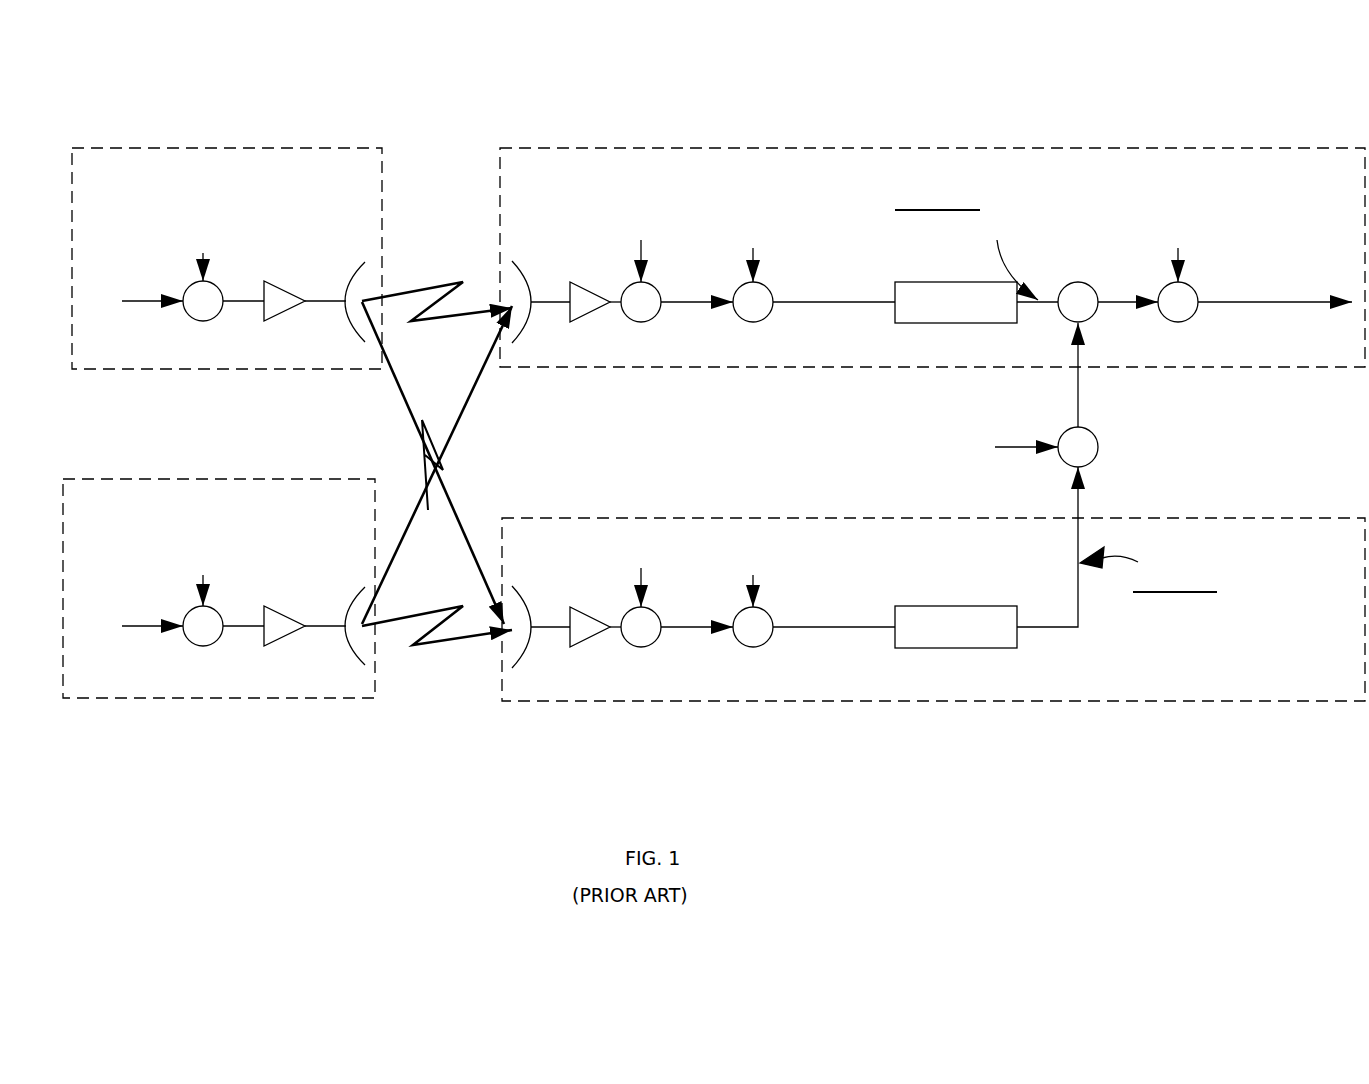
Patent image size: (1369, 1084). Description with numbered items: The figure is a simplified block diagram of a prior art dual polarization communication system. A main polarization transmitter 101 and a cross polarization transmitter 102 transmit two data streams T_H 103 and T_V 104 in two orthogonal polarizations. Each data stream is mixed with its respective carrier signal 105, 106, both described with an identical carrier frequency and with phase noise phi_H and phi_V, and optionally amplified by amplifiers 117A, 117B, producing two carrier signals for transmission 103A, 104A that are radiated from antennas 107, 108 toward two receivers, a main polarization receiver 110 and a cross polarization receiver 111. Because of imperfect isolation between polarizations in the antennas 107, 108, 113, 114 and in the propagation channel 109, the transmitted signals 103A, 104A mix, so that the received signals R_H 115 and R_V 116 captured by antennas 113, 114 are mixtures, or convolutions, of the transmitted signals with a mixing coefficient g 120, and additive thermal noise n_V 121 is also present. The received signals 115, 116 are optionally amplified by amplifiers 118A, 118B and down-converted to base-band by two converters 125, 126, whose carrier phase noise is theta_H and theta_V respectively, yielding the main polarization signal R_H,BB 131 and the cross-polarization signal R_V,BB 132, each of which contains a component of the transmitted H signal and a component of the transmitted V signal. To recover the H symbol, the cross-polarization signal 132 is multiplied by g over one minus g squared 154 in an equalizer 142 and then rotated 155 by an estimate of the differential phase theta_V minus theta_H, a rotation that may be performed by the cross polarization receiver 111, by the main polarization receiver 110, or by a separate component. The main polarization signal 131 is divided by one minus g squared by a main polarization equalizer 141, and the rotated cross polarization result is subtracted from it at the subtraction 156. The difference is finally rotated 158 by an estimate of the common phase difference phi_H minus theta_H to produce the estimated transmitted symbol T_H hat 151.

The main polarization transmitter 101 is at (120, 148).
The cross polarization transmitter 102 is at (118, 698).
The data stream T_H 103 is at (135, 316).
The data stream T_V 104 is at (131, 640).
The carrier signal 105 is at (228, 253).
The carrier signal 106 is at (212, 573).
The antenna 107 is at (352, 273).
The antenna 108 is at (352, 600).
The propagation channel 109 is at (467, 135).
The main polarization receiver 110 is at (722, 148).
The cross polarization receiver 111 is at (538, 701).
The antenna 113 is at (527, 288).
The antenna 114 is at (527, 613).
The received signal R_H 115 is at (677, 279).
The received signal R_V 116 is at (677, 608).
The amplifier 117A is at (280, 310).
The amplifier 117B is at (280, 635).
The amplifier 118A is at (585, 312).
The amplifier 118B is at (585, 637).
The mixing coefficient g 120 is at (485, 455).
The additive thermal noise n_V 121 is at (650, 396).
The H-polarization down-converter 125 is at (760, 321).
The V-polarization down-converter 126 is at (760, 647).
The main polarization signal R_H,BB 131 is at (840, 277).
The cross-polarization signal R_V,BB 132 is at (832, 597).
The main polarization equalizer 141 is at (928, 323).
The equalizer 142 is at (928, 648).
The estimated transmitted symbol T_H hat 151 is at (1275, 280).
The multiplication by g/(1-g^2) 154 is at (1193, 611).
The rotation 155 is at (1096, 438).
The subtraction 156 is at (1080, 282).
The rotation 158 is at (1196, 285).
The carrier signal for transmission 103A is at (462, 282).
The carrier signal for transmission 104A is at (437, 647).